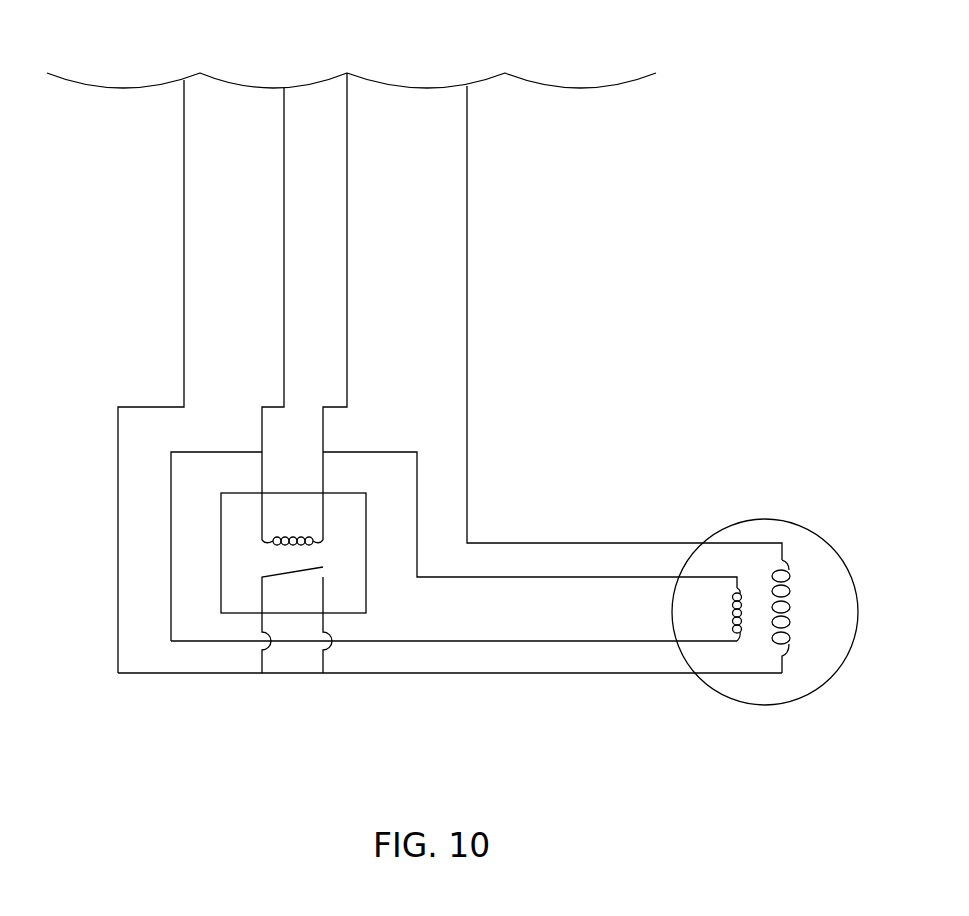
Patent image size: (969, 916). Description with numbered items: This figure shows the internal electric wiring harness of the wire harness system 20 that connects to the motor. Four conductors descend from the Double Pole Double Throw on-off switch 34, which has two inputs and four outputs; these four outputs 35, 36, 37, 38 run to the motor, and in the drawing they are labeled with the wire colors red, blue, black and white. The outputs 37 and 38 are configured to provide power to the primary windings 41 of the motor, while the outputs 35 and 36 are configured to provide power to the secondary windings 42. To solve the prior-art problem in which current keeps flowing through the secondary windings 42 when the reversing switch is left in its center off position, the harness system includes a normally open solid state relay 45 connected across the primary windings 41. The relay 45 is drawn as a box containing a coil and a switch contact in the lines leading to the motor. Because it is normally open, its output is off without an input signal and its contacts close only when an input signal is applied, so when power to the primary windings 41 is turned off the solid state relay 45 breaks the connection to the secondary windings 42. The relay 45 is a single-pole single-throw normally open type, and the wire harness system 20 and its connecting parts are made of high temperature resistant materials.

The wire harness system 20 is at (644, 347).
The DPDT on-off switch 34 is at (349, 73).
The output 35 is at (612, 543).
The output 36 is at (610, 674).
The output 37 is at (645, 577).
The output 38 is at (437, 641).
The primary windings 41 is at (740, 597).
The secondary windings 42 is at (790, 590).
The solid state relay 45 is at (222, 517).